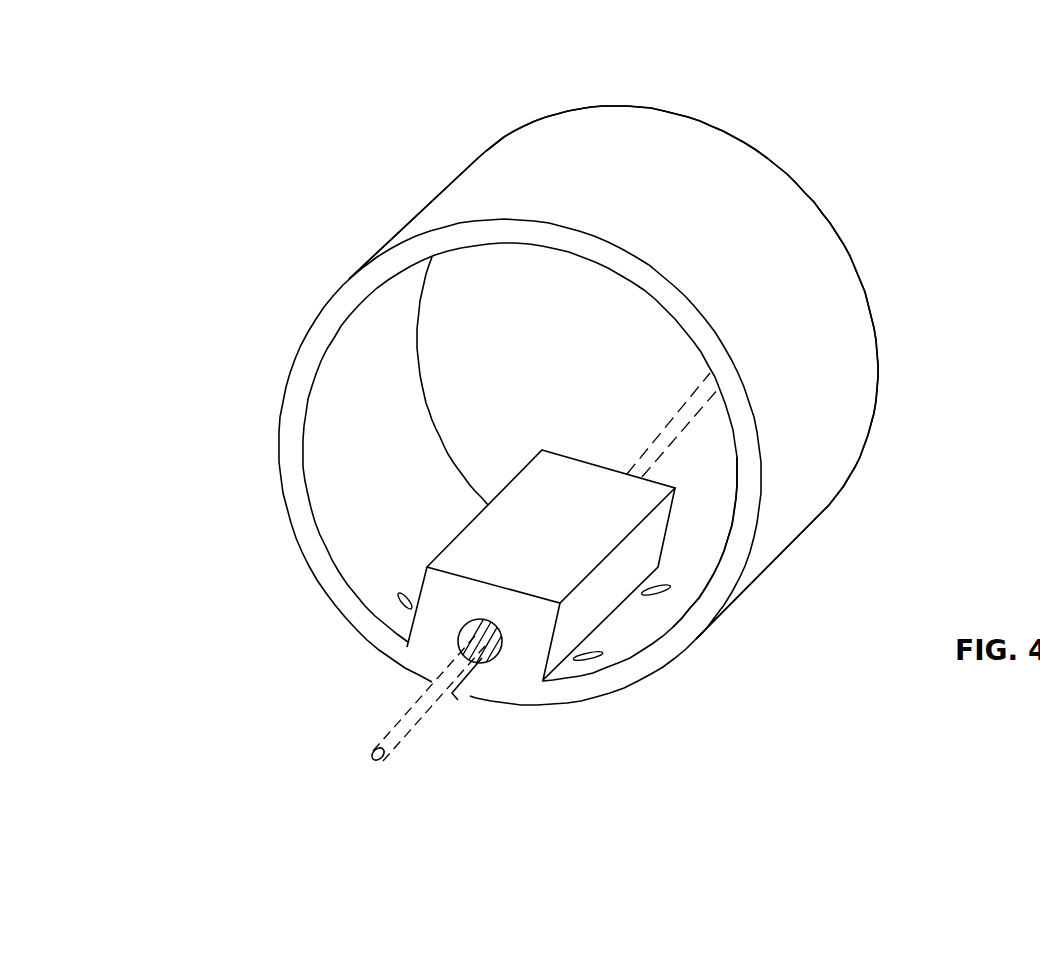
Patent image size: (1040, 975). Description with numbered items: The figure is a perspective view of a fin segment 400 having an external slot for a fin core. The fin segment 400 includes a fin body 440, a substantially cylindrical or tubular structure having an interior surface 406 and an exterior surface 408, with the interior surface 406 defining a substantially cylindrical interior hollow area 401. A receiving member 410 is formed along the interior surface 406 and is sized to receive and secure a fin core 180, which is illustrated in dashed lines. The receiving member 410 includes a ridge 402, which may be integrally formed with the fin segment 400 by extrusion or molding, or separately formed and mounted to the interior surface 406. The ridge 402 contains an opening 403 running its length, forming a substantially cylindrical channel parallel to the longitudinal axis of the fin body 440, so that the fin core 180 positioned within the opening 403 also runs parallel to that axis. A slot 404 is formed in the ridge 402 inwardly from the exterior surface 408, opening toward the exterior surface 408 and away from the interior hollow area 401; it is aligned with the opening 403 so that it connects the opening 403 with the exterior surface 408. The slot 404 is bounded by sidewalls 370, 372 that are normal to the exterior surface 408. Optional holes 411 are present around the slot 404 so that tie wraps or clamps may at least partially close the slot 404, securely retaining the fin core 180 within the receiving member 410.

The fin segment 400 is at (767, 92).
The fin body 440 is at (493, 177).
The interior hollow area 401 is at (473, 308).
The receiving member 410 is at (480, 508).
The exterior surface 408 is at (772, 455).
The interior surface 406 is at (697, 573).
The holes 411 is at (397, 603).
The sidewall 372 is at (467, 636).
The slot 404 is at (464, 706).
The opening 403 is at (460, 635).
The ridge 402 is at (527, 655).
The sidewall 370 is at (470, 688).
The fin core 180 is at (397, 753).